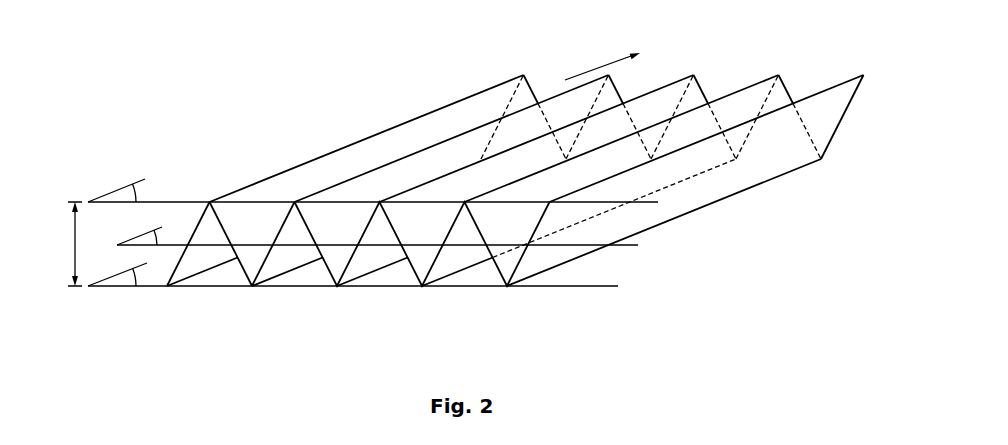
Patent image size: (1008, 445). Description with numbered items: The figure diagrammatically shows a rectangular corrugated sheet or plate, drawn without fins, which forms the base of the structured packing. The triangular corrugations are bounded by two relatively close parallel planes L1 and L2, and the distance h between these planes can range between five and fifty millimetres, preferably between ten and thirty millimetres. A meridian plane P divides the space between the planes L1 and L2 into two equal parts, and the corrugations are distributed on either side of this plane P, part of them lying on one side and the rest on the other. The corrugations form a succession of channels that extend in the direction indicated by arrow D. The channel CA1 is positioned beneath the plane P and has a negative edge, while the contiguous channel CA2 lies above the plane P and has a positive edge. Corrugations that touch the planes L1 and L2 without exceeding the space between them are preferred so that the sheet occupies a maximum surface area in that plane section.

The distance between planes L1 and L2 h is at (65, 244).
The parallel bounding plane L1 is at (117, 269).
The parallel bounding plane L2 is at (116, 185).
The meridian plane P is at (147, 233).
The channel CA1 is at (256, 224).
The channel CA2 is at (304, 280).
The arrow indicating channel direction D is at (602, 60).